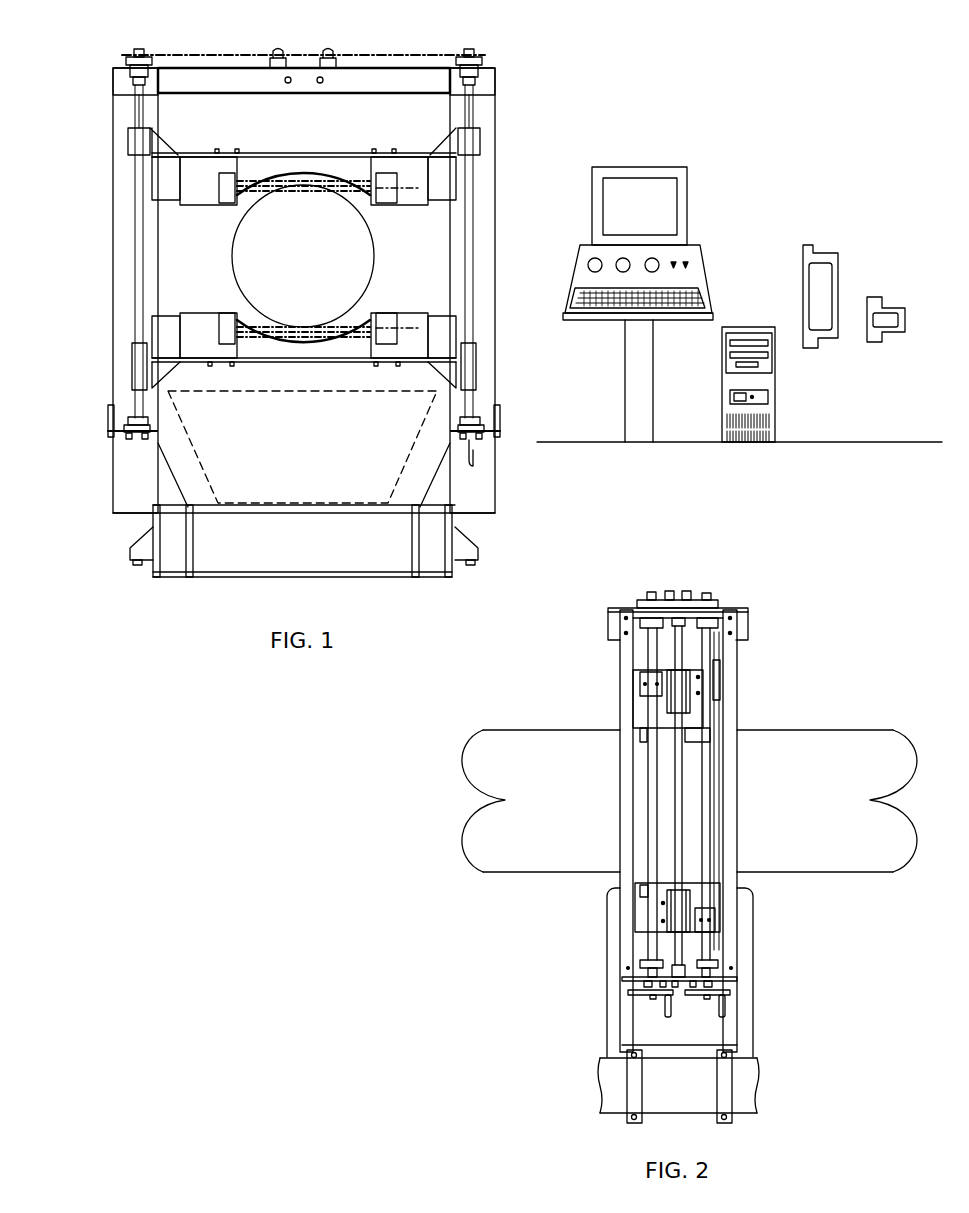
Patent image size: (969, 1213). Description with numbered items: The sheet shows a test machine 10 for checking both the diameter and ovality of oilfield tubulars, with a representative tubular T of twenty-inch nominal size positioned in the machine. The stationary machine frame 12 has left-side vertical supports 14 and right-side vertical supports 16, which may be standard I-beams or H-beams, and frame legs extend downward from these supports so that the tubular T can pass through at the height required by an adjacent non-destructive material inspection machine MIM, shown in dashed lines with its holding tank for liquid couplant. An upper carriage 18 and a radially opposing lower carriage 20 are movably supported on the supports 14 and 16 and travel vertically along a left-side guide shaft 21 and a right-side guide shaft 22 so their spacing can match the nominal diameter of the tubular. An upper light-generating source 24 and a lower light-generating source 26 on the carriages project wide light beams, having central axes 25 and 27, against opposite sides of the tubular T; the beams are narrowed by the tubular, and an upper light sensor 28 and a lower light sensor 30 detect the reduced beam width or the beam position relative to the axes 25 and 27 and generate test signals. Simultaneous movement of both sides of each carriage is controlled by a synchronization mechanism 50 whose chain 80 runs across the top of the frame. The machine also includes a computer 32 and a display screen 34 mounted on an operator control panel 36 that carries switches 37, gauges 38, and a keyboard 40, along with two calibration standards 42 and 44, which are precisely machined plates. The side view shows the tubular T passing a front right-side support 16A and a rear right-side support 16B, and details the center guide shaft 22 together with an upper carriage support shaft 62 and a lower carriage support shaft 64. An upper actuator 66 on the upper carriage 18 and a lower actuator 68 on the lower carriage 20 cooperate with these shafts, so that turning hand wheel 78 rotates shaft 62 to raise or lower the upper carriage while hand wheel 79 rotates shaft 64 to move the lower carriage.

In FIG. 1, the test machine 10 is at (512, 85).
In FIG. 1, the machine frame 12 is at (465, 490).
In FIG. 1, the left-side vertical supports 14 is at (116, 222).
In FIG. 1, the right-side vertical supports 16 is at (495, 195).
In FIG. 2, the front right-side support 16A is at (618, 672).
In FIG. 2, the rear right-side support 16B is at (738, 673).
In FIG. 1, the upper carriage 18 is at (340, 153).
In FIG. 2, the upper carriage 18 is at (663, 718).
In FIG. 1, the lower carriage 20 is at (158, 360).
In FIG. 2, the lower carriage 20 is at (697, 885).
In FIG. 1, the left-side guide shaft 21 is at (134, 298).
In FIG. 1, the right-side guide shaft 22 is at (472, 262).
In FIG. 2, the right-side guide shaft 22 is at (683, 817).
In FIG. 1, the upper light-generating source 24 is at (385, 195).
In FIG. 1, the central axis of upper light beam 25 is at (418, 185).
In FIG. 1, the lower light-generating source 26 is at (385, 330).
In FIG. 1, the central axis of lower light beam 27 is at (417, 328).
In FIG. 1, the upper light sensor 28 is at (222, 195).
In FIG. 1, the lower light sensor 30 is at (224, 330).
In FIG. 1, the computer 32 is at (775, 375).
In FIG. 1, the display screen 34 is at (655, 167).
In FIG. 1, the operator control panel 36 is at (710, 290).
In FIG. 1, the switches 37 is at (687, 263).
In FIG. 1, the gauges 38 is at (657, 260).
In FIG. 1, the keyboard 40 is at (605, 305).
In FIG. 1, the calibration standard 42 is at (820, 253).
In FIG. 1, the calibration standard 44 is at (885, 300).
In FIG. 1, the synchronization mechanism 50 is at (378, 56).
In FIG. 2, the upper carriage support shaft 62 is at (648, 847).
In FIG. 2, the lower carriage support shaft 64 is at (710, 758).
In FIG. 2, the upper actuator 66 is at (650, 676).
In FIG. 2, the lower actuator 68 is at (722, 932).
In FIG. 2, the hand wheel 78 is at (637, 997).
In FIG. 2, the hand wheel 79 is at (727, 1010).
In FIG. 1, the chain 80 is at (213, 56).
In FIG. 1, the tubular T is at (376, 260).
In FIG. 2, the tubular T is at (835, 730).
In FIG. 1, the material inspection machine MIM is at (400, 478).